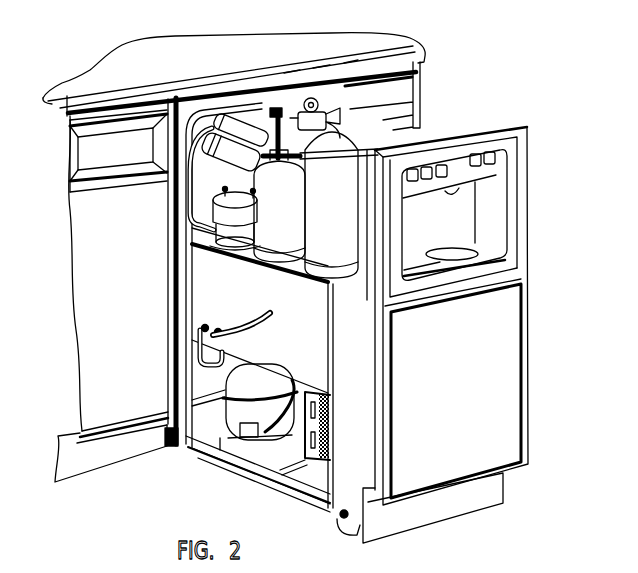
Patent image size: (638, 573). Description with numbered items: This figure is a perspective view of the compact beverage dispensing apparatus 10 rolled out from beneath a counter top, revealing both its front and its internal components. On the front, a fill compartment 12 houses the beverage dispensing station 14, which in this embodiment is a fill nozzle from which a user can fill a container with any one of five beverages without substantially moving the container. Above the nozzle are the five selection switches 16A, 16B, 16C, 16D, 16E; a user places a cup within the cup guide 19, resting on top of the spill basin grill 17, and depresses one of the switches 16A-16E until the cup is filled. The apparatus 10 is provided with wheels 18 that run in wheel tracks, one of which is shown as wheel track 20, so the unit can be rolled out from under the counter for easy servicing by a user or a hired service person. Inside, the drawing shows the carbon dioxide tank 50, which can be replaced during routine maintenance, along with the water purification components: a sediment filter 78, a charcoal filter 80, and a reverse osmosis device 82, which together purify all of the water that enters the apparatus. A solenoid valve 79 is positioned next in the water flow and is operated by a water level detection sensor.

The beverage dispensing apparatus 10 is at (547, 302).
The fill compartment 12 is at (490, 211).
The beverage dispensing station 14 is at (453, 192).
The selection switch 16A is at (413, 170).
The selection switch 16B is at (427, 168).
The selection switch 16C is at (441, 166).
The selection switch 16D is at (482, 166).
The selection switch 16E is at (497, 163).
The spill basin grill 17 is at (427, 274).
The wheels 18 is at (340, 530).
The cup guide 19 is at (478, 257).
The wheel track 20 is at (175, 450).
The carbon dioxide tank 50 is at (347, 138).
The sediment filter 78 is at (240, 115).
The solenoid valve 79 is at (263, 106).
The charcoal filter 80 is at (212, 192).
The reverse osmosis device 82 is at (214, 122).